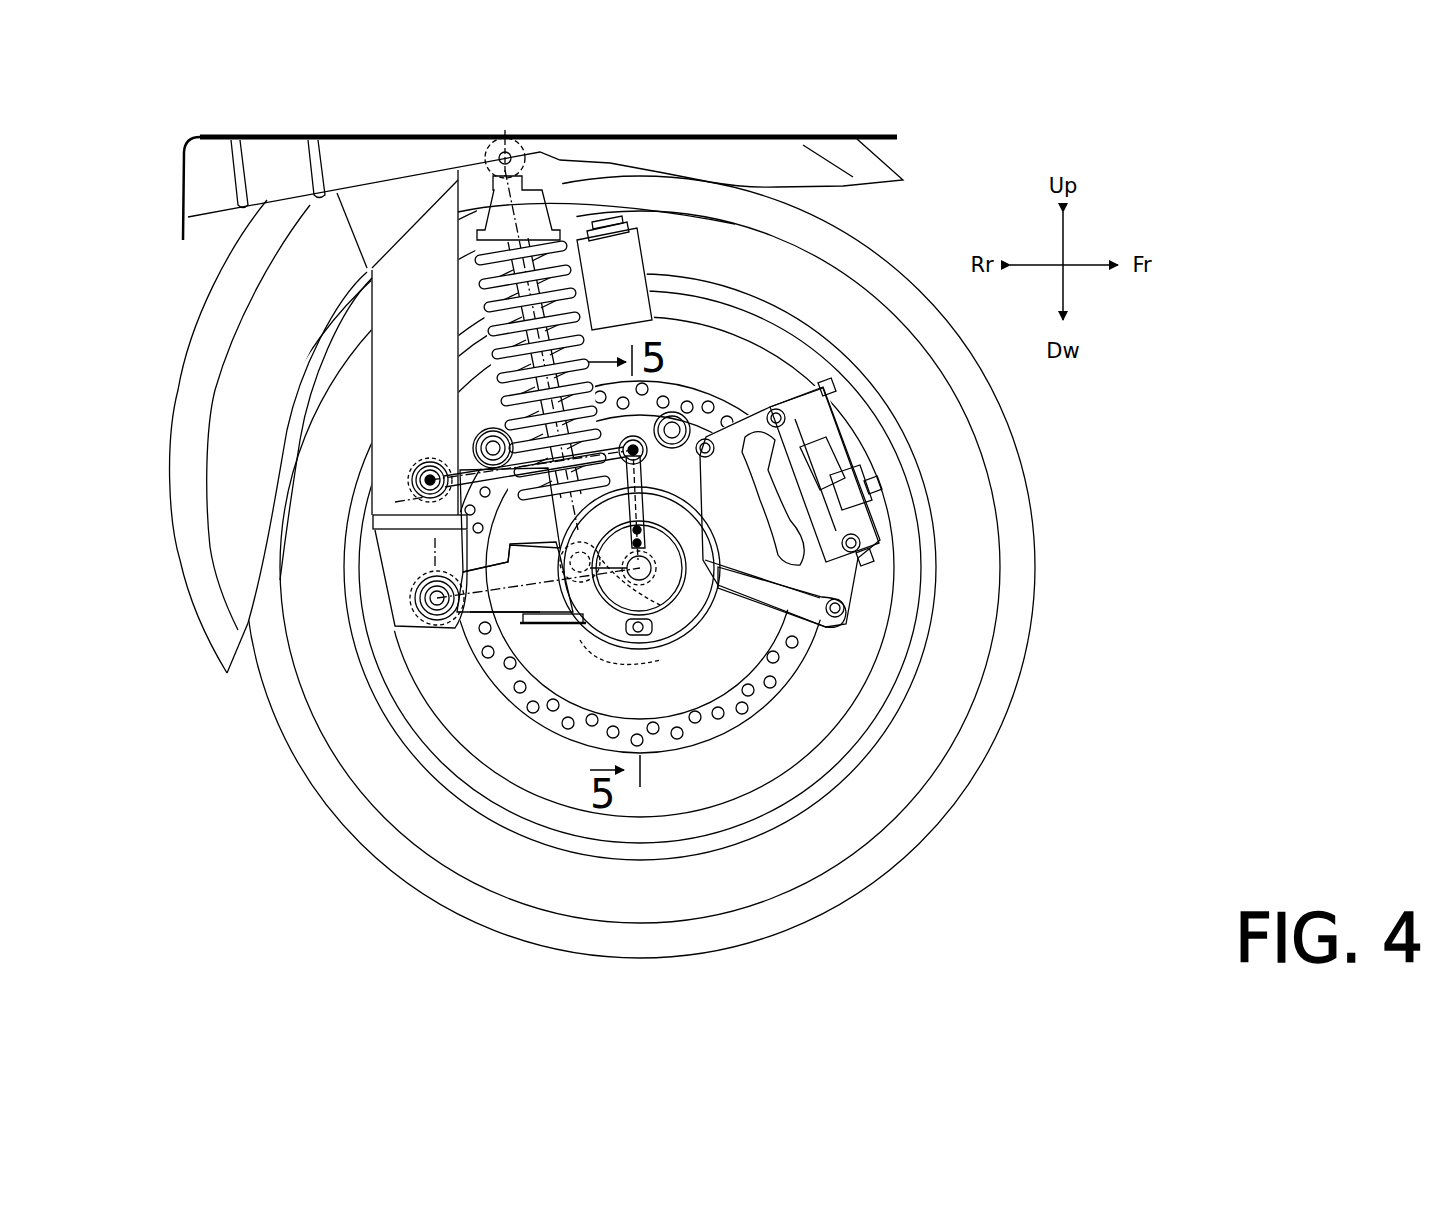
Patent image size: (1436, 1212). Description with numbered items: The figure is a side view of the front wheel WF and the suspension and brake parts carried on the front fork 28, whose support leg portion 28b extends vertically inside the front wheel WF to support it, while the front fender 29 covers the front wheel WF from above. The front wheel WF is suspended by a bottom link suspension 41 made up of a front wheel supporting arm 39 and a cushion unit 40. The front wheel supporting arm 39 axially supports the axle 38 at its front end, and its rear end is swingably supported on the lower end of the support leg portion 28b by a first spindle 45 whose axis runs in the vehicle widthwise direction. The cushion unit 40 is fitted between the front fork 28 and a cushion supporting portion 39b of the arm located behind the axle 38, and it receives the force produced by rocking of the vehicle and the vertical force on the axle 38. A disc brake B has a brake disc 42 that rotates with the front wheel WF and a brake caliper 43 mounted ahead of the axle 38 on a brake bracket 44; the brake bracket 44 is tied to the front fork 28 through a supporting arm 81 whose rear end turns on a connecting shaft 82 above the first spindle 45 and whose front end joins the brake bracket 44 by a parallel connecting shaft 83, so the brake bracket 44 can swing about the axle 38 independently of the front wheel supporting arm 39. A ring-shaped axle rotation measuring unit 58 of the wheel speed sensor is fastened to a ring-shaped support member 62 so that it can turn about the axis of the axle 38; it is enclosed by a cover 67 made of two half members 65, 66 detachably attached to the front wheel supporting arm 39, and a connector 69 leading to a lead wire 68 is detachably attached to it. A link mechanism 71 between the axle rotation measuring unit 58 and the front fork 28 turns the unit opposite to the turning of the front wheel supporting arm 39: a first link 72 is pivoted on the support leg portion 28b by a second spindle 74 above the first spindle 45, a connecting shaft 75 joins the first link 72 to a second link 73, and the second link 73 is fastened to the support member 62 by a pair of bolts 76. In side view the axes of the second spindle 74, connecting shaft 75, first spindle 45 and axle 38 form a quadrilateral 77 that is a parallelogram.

The front fork 28 is at (365, 420).
The support leg portion 28b is at (388, 348).
The front fender 29 is at (193, 563).
The axle 38 is at (664, 650).
The front wheel supporting arm 39 is at (500, 618).
The cushion supporting portion 39b is at (553, 630).
The cushion unit 40 is at (500, 291).
The bottom link suspension 41 is at (533, 630).
The brake disc 42 is at (695, 398).
The brake caliper 43 is at (855, 484).
The brake bracket 44 is at (787, 608).
The first spindle 45 is at (428, 600).
The axle rotation measuring unit 58 is at (697, 587).
The support member 62 is at (663, 588).
The half member 65 is at (700, 518).
The half member 66 is at (712, 603).
The cover 67 is at (672, 648).
The lead wire 68 is at (639, 632).
The connector 69 is at (627, 631).
The link mechanism 71 is at (446, 465).
The first link 72 is at (420, 571).
The second link 73 is at (580, 562).
The second spindle 74 is at (418, 476).
The connecting shaft 75 is at (646, 466).
The bolts 76 is at (653, 525).
The quadrilateral 77 is at (372, 506).
The supporting arm 81 is at (636, 436).
The connecting shaft 82 is at (487, 432).
The connecting shaft 83 is at (690, 428).
The disc brake B is at (800, 392).
The front wheel WF is at (950, 710).